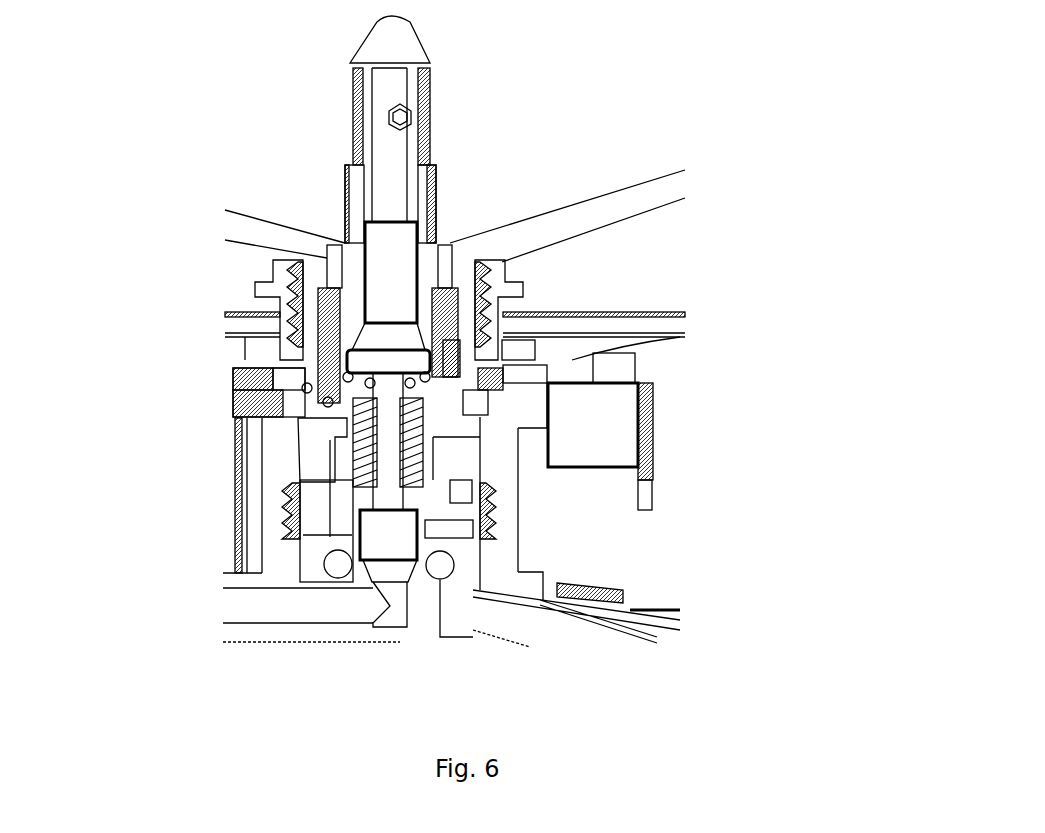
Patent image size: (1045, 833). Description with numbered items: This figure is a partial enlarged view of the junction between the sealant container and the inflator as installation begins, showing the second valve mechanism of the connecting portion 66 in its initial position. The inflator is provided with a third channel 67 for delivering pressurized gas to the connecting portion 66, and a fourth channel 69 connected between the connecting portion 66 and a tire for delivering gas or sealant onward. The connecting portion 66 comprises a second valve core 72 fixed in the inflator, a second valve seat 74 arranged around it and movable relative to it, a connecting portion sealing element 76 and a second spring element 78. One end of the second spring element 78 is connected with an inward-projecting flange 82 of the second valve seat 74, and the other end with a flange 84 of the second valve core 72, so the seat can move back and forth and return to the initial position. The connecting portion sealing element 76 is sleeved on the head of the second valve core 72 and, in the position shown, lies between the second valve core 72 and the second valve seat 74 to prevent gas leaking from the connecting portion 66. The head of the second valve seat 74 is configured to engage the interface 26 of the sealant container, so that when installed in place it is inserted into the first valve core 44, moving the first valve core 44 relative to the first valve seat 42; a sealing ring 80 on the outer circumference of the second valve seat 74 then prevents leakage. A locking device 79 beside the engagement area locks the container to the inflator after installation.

The first valve core 44 is at (360, 180).
The first valve seat 42 is at (315, 269).
The interface 26 is at (420, 353).
The sealing ring 80 is at (340, 378).
The connecting portion sealing element 76 is at (405, 385).
The inward-projecting flange 82 is at (300, 390).
The connecting portion 66 is at (313, 428).
The second spring element 78 is at (330, 455).
The second valve seat 74 is at (437, 453).
The second valve core 72 is at (390, 497).
The flange 84 is at (300, 492).
The locking device 79 is at (658, 418).
The third channel 67 is at (226, 604).
The fourth channel 69 is at (550, 638).